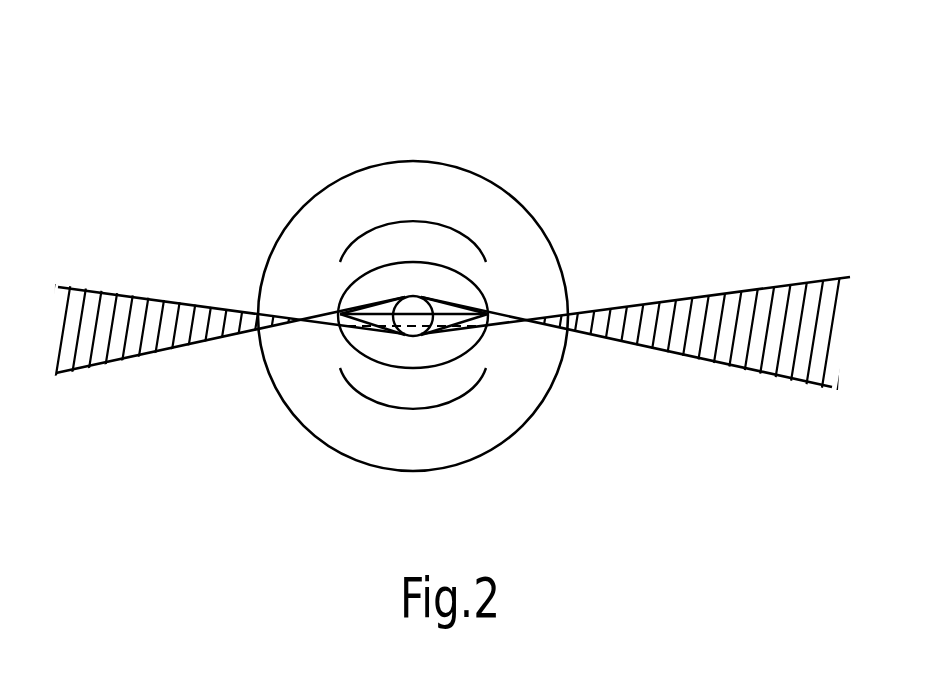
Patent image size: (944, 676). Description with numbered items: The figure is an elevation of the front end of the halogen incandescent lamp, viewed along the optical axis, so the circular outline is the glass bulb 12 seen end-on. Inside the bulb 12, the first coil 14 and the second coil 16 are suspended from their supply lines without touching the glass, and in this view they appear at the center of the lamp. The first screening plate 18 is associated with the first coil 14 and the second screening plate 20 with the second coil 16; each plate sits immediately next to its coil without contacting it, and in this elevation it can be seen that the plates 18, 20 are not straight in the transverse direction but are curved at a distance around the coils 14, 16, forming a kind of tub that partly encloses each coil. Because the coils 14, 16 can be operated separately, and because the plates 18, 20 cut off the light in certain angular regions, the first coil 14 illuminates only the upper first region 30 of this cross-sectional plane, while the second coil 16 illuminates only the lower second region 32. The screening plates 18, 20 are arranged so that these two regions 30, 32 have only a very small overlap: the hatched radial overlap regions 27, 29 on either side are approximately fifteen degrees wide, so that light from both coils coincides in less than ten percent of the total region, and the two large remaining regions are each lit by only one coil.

The glass bulb 12 is at (535, 408).
The first coil 14 is at (388, 330).
The second coil 16 is at (393, 303).
The first screening plate 18 is at (413, 370).
The second screening plate 20 is at (417, 262).
The radial overlap region 27 is at (640, 325).
The radial overlap region 29 is at (212, 325).
The first region 30 is at (472, 88).
The second region 32 is at (474, 528).